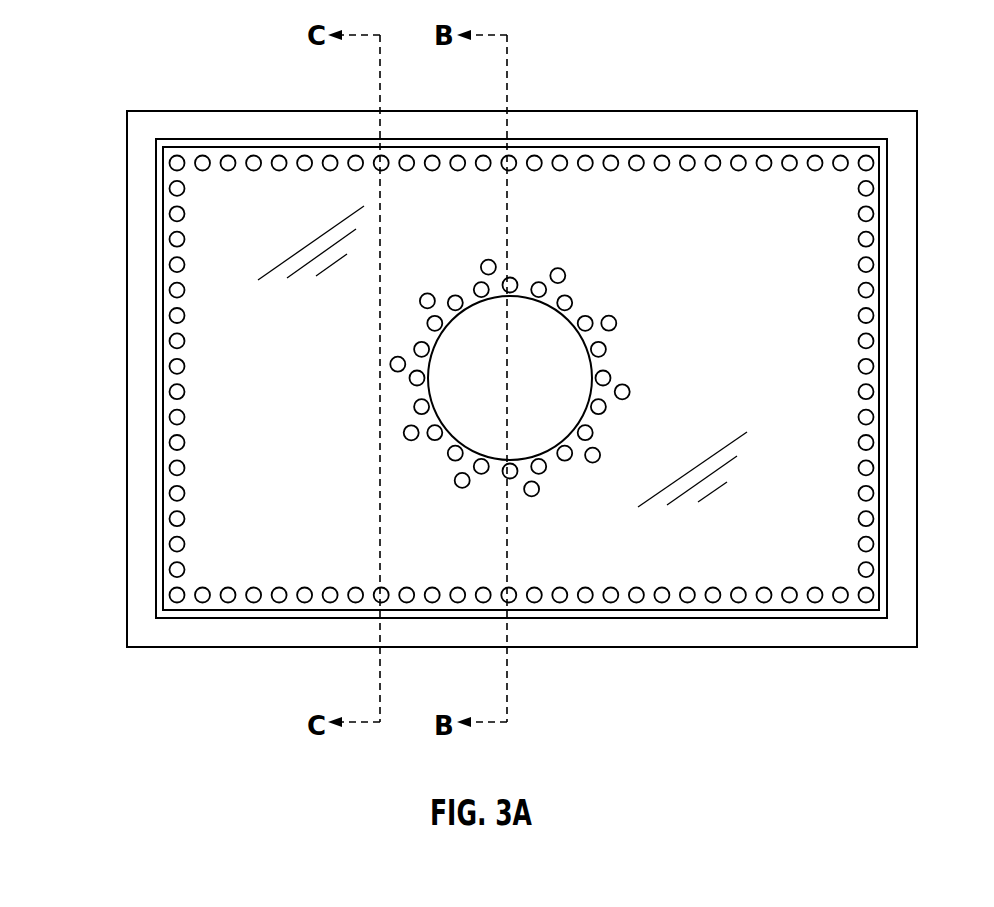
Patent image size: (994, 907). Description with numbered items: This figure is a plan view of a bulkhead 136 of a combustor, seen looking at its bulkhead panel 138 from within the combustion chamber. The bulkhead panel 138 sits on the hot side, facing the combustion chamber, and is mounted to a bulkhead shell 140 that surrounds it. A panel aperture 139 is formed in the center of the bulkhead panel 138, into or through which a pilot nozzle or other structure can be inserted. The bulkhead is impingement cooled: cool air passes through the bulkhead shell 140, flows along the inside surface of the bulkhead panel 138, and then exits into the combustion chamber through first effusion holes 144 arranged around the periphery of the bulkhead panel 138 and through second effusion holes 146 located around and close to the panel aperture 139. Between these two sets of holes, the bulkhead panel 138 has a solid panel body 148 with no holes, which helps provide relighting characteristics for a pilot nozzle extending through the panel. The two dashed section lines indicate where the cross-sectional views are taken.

The bulkhead 136 is at (120, 243).
The bulkhead panel 138 is at (155, 390).
The panel aperture 139 is at (565, 393).
The bulkhead shell 140 is at (616, 110).
The first effusion holes 144 is at (253, 160).
The second effusion holes 146 is at (611, 316).
The panel body 148 is at (313, 318).